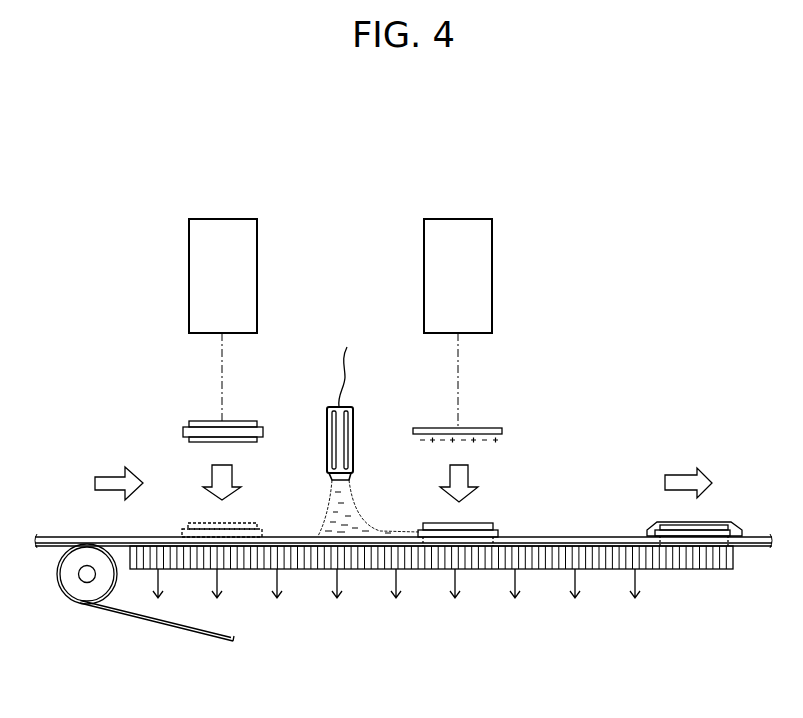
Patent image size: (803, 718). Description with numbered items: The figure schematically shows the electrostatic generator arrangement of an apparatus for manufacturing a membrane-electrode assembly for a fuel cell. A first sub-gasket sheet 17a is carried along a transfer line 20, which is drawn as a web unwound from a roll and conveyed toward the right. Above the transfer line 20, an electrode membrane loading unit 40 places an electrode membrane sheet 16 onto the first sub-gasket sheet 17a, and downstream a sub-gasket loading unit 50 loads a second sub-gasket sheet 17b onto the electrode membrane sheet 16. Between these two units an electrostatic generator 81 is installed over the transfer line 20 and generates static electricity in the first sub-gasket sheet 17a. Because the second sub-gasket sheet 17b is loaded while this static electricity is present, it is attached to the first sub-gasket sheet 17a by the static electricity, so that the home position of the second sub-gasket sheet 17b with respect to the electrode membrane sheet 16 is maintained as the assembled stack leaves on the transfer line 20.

The electrode membrane sheet 16 is at (258, 409).
The first sub-gasket sheet 17a is at (572, 540).
The second sub-gasket sheet 17b is at (503, 431).
The transfer line 20 is at (90, 534).
The electrode membrane loading unit 40 is at (257, 274).
The sub-gasket loading unit 50 is at (492, 274).
The electrostatic generator 81 is at (354, 420).